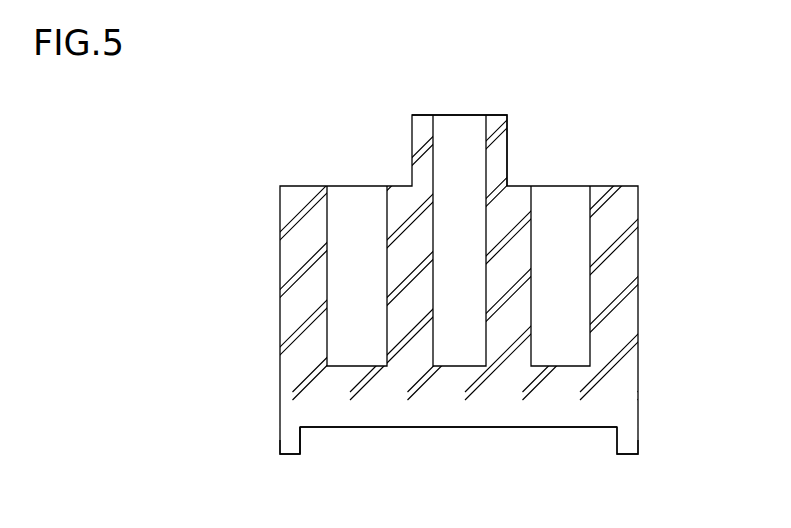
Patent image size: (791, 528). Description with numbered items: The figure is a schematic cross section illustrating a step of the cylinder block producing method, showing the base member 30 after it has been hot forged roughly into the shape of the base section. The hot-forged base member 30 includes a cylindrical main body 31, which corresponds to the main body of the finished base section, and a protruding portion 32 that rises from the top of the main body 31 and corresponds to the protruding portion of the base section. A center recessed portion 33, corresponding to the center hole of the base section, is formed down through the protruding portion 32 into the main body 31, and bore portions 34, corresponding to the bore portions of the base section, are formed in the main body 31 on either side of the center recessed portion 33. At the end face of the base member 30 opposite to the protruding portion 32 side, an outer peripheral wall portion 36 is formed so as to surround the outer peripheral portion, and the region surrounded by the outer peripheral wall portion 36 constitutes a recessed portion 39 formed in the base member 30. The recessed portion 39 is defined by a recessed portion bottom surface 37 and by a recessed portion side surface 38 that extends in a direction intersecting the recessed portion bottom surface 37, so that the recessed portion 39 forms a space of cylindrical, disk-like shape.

The base member 30 is at (455, 227).
The main body 31 is at (627, 320).
The protruding portion 32 is at (487, 129).
The center recessed portion 33 is at (433, 145).
The bore portions 34 is at (328, 222).
The outer peripheral wall portion 36 is at (297, 446).
The recessed portion bottom surface 37 is at (542, 428).
The recessed portion side surface 38 is at (302, 439).
The recessed portion 39 is at (464, 454).